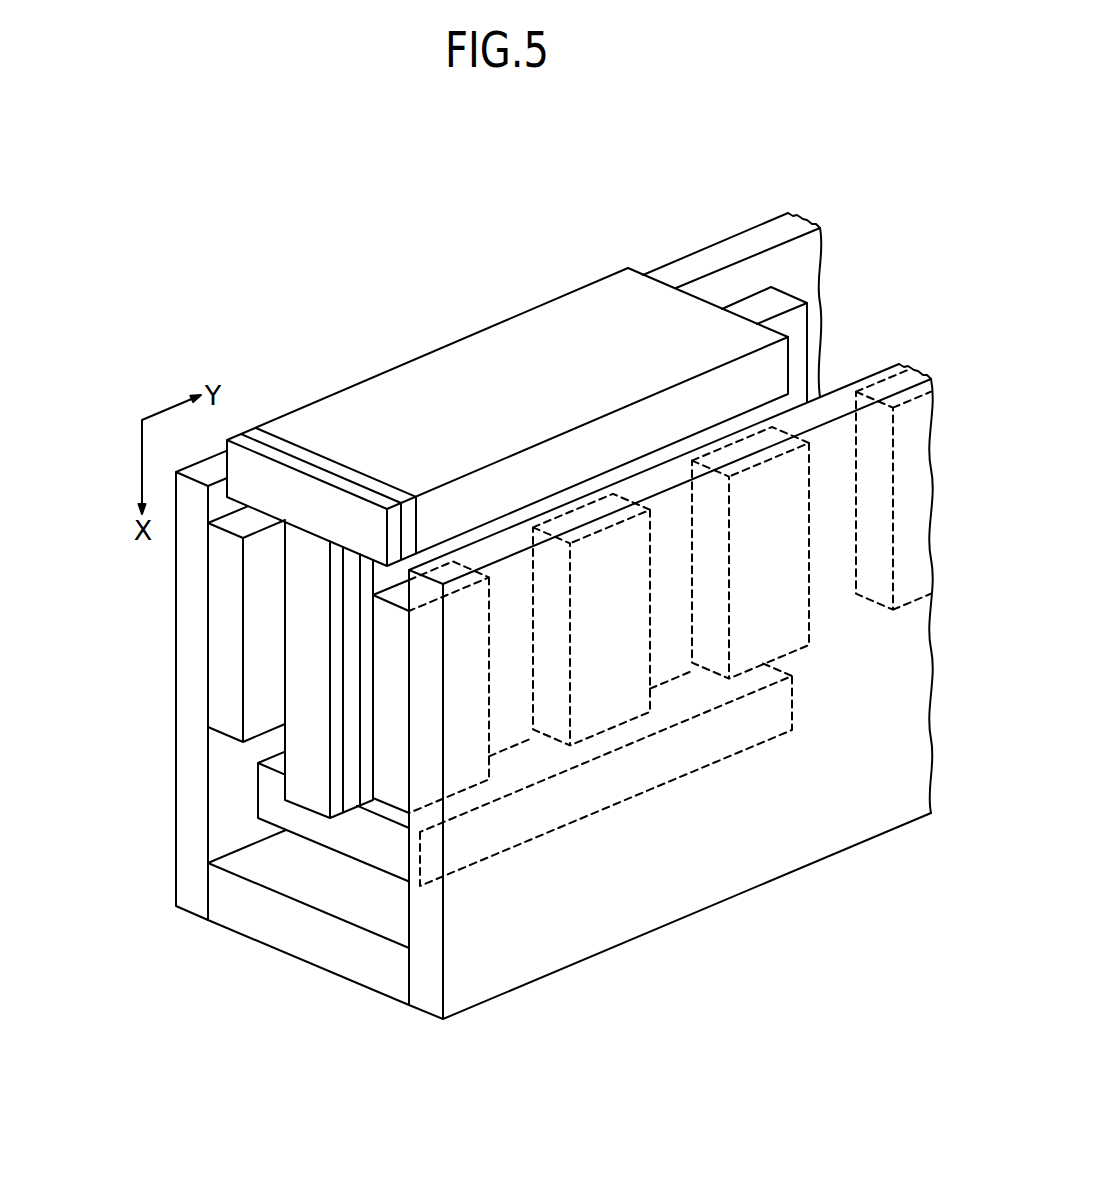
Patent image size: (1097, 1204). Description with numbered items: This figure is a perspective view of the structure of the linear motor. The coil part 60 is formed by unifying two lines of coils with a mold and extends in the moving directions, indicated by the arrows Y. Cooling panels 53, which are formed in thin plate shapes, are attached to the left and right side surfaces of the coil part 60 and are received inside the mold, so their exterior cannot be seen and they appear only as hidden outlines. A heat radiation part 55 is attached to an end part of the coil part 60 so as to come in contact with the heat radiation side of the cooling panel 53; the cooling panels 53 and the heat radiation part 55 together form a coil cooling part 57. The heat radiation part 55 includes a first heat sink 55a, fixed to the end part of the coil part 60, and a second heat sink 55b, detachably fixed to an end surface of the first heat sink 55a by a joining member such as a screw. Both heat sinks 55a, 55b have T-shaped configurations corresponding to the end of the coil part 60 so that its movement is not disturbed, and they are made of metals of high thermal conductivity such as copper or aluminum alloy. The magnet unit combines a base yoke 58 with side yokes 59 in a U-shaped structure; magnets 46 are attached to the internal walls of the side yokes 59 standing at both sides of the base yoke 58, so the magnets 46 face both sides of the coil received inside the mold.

The magnet 46 is at (223, 662).
The cooling panel 53 is at (363, 770).
The heat radiation part 55 is at (266, 563).
The first heat sink 55a is at (320, 460).
The second heat sink 55b is at (262, 448).
The coil cooling part 57 is at (113, 718).
The base yoke 58 is at (322, 953).
The side yoke 59 is at (192, 622).
The coil part 60 is at (437, 349).